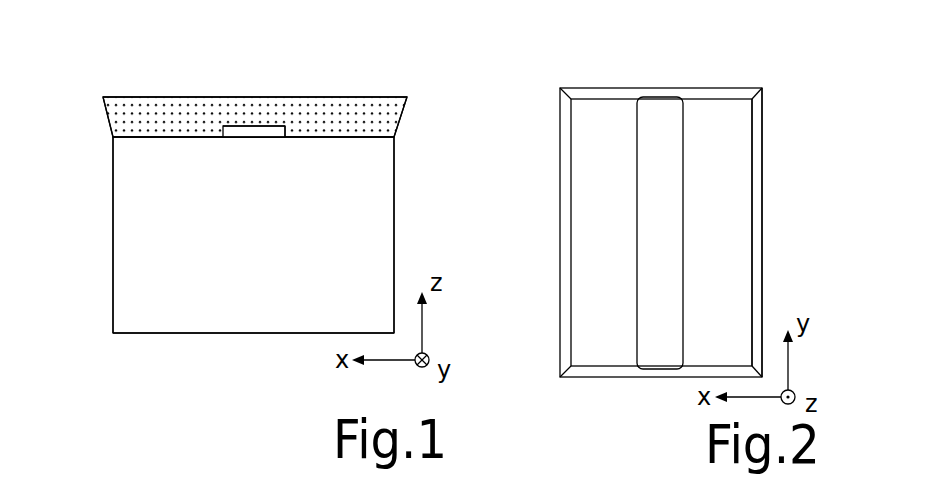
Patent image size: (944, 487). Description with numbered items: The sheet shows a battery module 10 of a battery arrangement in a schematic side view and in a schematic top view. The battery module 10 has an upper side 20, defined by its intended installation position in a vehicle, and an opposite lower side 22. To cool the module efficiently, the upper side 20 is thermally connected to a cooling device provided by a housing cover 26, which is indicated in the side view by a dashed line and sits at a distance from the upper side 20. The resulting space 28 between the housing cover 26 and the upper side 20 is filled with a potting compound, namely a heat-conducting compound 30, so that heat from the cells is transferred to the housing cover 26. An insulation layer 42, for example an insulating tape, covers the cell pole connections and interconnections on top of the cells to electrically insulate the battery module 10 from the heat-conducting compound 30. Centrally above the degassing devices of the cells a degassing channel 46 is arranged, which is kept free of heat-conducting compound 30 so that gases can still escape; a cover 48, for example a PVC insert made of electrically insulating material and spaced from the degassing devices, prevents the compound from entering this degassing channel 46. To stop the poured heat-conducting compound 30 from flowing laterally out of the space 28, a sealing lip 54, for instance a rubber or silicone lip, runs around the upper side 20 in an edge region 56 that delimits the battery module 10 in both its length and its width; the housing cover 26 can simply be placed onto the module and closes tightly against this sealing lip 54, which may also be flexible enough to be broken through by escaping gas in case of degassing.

In FIG. 1, the battery module 10 is at (108, 86).
In FIG. 2, the battery module 10 is at (574, 78).
In FIG. 1, the upper side 20 is at (355, 120).
In FIG. 2, the upper side 20 is at (718, 125).
In FIG. 1, the lower side 22 is at (247, 335).
In FIG. 1, the housing cover 26 is at (209, 88).
In FIG. 1, the space 28 is at (307, 115).
In FIG. 1, the heat-conducting compound 30 is at (147, 117).
In FIG. 1, the insulation layer 42 is at (197, 137).
In FIG. 1, the degassing channel 46 is at (245, 137).
In FIG. 1, the cover 48 is at (262, 122).
In FIG. 1, the sealing lip 54 is at (102, 118).
In FIG. 2, the sealing lip 54 is at (763, 223).
In FIG. 2, the edge region 56 is at (753, 168).